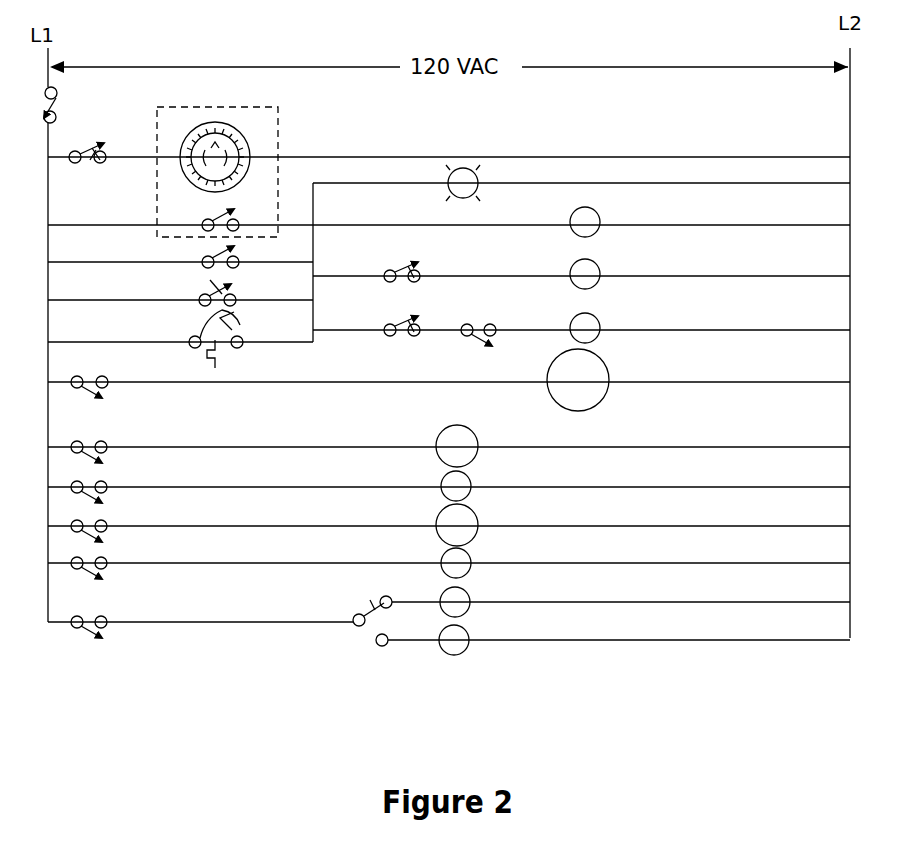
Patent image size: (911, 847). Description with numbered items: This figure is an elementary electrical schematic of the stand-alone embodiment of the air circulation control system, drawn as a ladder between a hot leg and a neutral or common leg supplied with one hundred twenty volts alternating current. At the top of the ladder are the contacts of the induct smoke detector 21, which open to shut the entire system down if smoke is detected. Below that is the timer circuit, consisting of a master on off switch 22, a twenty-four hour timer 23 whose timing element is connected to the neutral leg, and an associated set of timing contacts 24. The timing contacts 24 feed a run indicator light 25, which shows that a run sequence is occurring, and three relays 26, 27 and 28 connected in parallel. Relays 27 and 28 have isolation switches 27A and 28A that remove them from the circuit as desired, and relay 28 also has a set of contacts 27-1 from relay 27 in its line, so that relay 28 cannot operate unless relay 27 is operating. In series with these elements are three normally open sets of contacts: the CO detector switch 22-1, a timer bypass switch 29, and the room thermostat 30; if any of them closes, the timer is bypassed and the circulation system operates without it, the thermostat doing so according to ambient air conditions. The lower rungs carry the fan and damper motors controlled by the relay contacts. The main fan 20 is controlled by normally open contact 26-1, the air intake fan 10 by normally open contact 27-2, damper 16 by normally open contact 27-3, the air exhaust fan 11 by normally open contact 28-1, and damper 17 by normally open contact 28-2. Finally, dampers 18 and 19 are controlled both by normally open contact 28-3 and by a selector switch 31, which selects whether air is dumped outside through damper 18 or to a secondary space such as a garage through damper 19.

The air intake fan 10 is at (478, 453).
The air exhaust fan 11 is at (478, 535).
The damper 16 is at (470, 491).
The damper 17 is at (470, 568).
The damper 18 is at (470, 608).
The damper 19 is at (462, 652).
The main fan 20 is at (602, 400).
The induct smoke detector 21 is at (62, 107).
The master on off switch 22 is at (84, 170).
The CO detector switch 22-1 is at (200, 254).
The timer 23 is at (262, 148).
The timing contacts 24 is at (213, 213).
The run indicator light 25 is at (452, 194).
The relay 26 is at (597, 214).
The normally open contact 26-1 is at (108, 390).
The relay 27 is at (598, 270).
The isolation switch 27A is at (421, 266).
The contacts 27-1 is at (462, 338).
The normally open contact 27-2 is at (108, 462).
The normally open contact 27-3 is at (108, 494).
The relay 28 is at (604, 318).
The isolation switch 28A is at (398, 313).
The normally open contact 28-1 is at (108, 534).
The normally open contact 28-2 is at (108, 573).
The normally open contact 28-3 is at (108, 634).
The timer bypass switch 29 is at (240, 291).
The room thermostat 30 is at (233, 354).
The selector switch 31 is at (352, 612).